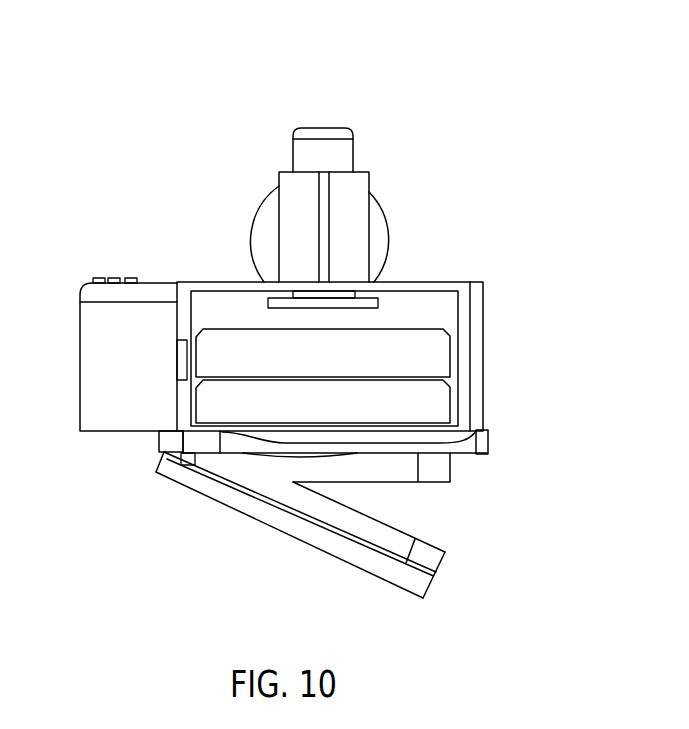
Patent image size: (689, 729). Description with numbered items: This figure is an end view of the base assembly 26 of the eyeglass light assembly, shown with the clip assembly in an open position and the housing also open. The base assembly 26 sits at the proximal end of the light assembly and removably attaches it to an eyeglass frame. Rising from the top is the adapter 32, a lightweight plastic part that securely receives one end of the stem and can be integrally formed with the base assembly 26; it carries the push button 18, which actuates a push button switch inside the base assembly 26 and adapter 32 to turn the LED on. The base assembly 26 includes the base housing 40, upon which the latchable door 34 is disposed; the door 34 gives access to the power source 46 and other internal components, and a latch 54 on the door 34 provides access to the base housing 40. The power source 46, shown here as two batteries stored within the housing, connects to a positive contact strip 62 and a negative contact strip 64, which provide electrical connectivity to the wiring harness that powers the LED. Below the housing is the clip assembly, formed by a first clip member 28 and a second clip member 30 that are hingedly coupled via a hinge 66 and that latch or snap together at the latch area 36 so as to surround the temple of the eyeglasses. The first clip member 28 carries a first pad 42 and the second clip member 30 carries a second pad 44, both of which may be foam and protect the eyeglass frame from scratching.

The push button 18 is at (322, 130).
The base assembly 26 is at (507, 102).
The first clip member 28 is at (480, 444).
The second clip member 30 is at (265, 513).
The adapter 32 is at (267, 205).
The latchable door 34 is at (152, 283).
The latch area 36 is at (433, 518).
The base housing 40 is at (225, 282).
The first pad 42 is at (350, 478).
The second pad 44 is at (345, 523).
The power source 46 is at (433, 370).
The latch 54 is at (93, 281).
The positive contact strip 62 is at (454, 424).
The negative contact strip 64 is at (360, 308).
The hinge 66 is at (161, 451).